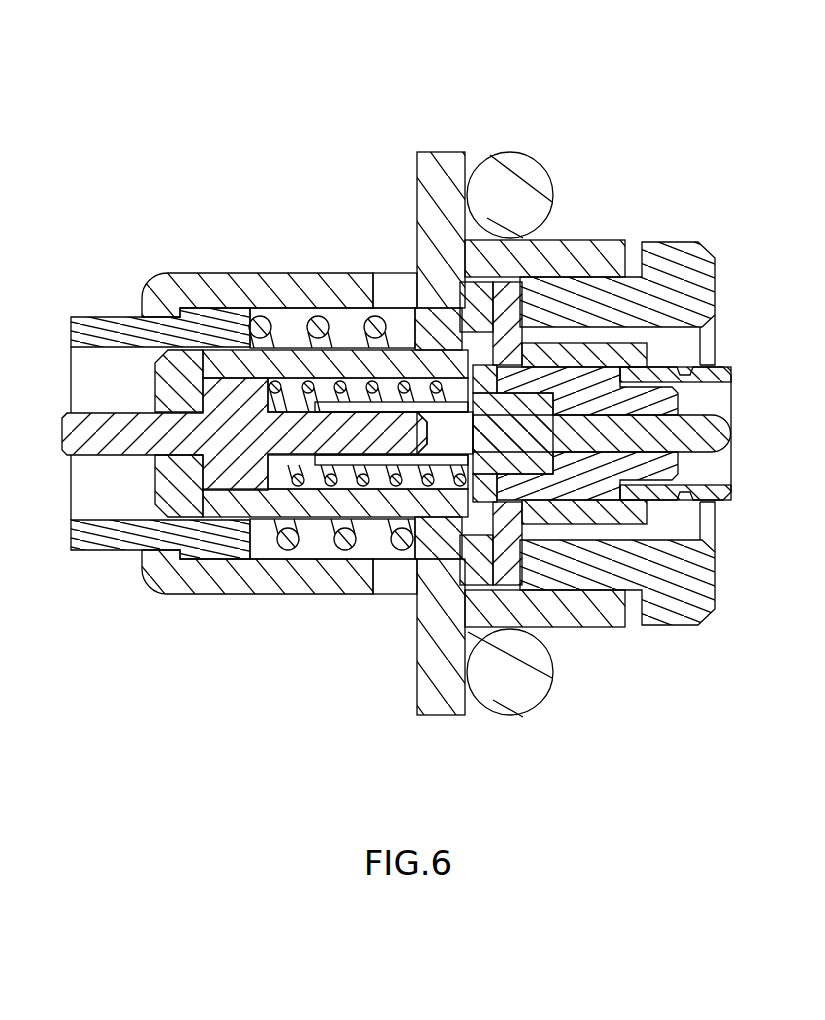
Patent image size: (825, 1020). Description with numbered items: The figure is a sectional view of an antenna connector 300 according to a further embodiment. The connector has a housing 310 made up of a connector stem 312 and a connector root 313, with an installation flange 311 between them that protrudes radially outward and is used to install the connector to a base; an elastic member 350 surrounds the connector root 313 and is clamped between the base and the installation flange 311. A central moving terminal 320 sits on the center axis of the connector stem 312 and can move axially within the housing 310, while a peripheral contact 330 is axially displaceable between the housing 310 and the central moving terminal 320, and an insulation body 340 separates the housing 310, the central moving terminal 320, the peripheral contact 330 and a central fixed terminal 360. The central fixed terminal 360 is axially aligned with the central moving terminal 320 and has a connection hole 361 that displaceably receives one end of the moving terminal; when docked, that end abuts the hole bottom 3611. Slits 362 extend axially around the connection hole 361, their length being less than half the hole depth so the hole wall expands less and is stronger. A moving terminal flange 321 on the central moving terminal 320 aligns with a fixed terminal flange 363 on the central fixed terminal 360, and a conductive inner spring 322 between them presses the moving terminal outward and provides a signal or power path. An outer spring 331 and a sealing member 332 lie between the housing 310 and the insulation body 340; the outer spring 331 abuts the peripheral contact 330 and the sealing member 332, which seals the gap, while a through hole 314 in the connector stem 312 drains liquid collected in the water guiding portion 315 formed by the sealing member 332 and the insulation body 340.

The antenna connector 300 is at (333, 699).
The housing 310 is at (508, 86).
The installation flange 311 is at (443, 173).
The connector stem 312 is at (333, 287).
The connector root 313 is at (480, 262).
The through hole 314 is at (400, 290).
The water guiding portion 315 is at (357, 317).
The central moving terminal 320 is at (305, 437).
The moving terminal flange 321 is at (222, 492).
The inner spring 322 is at (368, 468).
The peripheral contact 330 is at (123, 330).
The outer spring 331 is at (258, 327).
The sealing member 332 is at (560, 317).
The insulation body 340 is at (213, 363).
The elastic member 350 is at (497, 703).
The central fixed terminal 360 is at (724, 463).
The connection hole 361 is at (610, 456).
The hole bottom 3611 is at (476, 436).
The slits 362 is at (640, 394).
The fixed terminal flange 363 is at (645, 512).